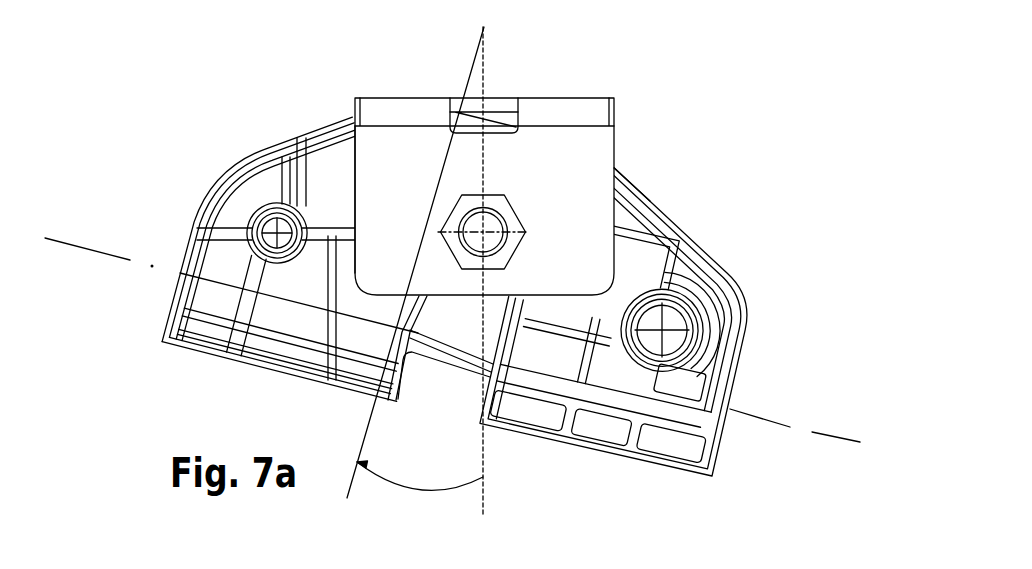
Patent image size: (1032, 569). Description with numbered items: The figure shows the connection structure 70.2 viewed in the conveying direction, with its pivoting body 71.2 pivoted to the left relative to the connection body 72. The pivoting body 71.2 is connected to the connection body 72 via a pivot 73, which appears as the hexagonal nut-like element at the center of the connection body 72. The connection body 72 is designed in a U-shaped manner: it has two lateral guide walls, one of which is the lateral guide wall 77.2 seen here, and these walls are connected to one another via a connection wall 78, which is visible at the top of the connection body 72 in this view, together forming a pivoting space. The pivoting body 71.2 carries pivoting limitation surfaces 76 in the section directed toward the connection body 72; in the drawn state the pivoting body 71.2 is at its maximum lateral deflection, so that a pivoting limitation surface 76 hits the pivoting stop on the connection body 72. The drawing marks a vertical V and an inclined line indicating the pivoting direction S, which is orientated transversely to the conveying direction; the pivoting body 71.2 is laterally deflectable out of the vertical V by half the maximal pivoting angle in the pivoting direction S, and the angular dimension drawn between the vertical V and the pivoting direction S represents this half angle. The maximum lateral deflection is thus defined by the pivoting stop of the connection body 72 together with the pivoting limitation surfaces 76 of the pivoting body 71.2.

The connection structure 70.2 is at (723, 262).
The pivoting body 71.2 is at (748, 363).
The connection body 72 is at (570, 163).
The pivot 73 is at (477, 240).
The pivoting limitation surface 76 is at (622, 171).
The lateral guide wall 77.2 is at (407, 175).
The connection wall 78 is at (567, 98).
The pivoting direction S is at (423, 490).
The vertical V is at (483, 477).